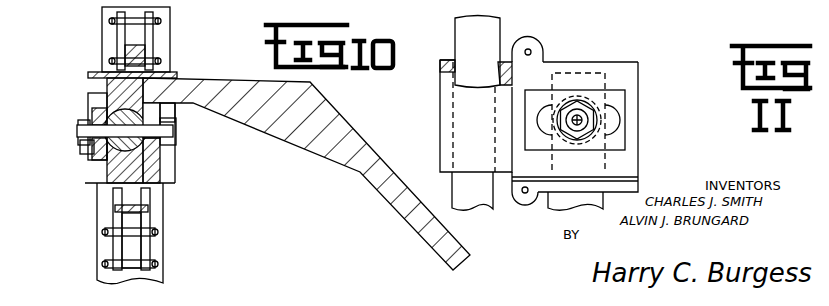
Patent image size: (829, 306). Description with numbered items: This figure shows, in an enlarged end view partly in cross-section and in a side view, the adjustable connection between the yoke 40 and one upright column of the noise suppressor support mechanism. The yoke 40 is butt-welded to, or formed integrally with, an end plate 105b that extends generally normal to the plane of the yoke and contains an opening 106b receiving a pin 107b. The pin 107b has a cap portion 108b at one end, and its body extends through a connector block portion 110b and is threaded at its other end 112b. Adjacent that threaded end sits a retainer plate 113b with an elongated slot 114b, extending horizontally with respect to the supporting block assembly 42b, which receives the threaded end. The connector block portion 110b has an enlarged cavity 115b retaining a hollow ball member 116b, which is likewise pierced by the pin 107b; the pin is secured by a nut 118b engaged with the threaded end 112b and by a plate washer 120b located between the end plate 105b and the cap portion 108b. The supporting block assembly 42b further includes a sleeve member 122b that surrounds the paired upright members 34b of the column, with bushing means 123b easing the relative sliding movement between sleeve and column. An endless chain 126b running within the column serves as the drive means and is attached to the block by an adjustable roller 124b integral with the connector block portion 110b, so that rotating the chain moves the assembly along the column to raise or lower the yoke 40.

In FIG. 10, the columns 34b is at (178, 24).
In FIG. 11, the columns 34b is at (511, 29).
In FIG. 10, the yoke 40 is at (389, 213).
In FIG. 11, the yoke 40 is at (615, 203).
In FIG. 10, the connecting or supporting block assembly 42b is at (201, 55).
In FIG. 11, the connecting or supporting block assembly 42b is at (584, 46).
In FIG. 10, the end plate 105b is at (160, 173).
In FIG. 10, the opening 106b is at (167, 160).
In FIG. 10, the pin 107b is at (147, 202).
In FIG. 11, the pin 107b is at (575, 169).
In FIG. 10, the cap portion 108b is at (170, 137).
In FIG. 10, the connector block portion 110b is at (107, 173).
In FIG. 11, the connector block portion 110b is at (628, 68).
In FIG. 10, the threaded end 112b is at (76, 130).
In FIG. 11, the threaded end 112b is at (580, 119).
In FIG. 10, the retainer plate 113b is at (97, 98).
In FIG. 11, the retainer plate 113b is at (545, 148).
In FIG. 10, the elongated slot 114b is at (85, 141).
In FIG. 11, the elongated slot 114b is at (613, 122).
In FIG. 10, the enlarged cavity 115b is at (118, 100).
In FIG. 11, the enlarged cavity 115b is at (560, 120).
In FIG. 10, the hollow ball member 116b is at (133, 218).
In FIG. 10, the nut 118b is at (80, 160).
In FIG. 11, the nut 118b is at (597, 147).
In FIG. 10, the plate washer 120b is at (170, 122).
In FIG. 11, the sleeve member 122b is at (442, 128).
In FIG. 11, the bushing means 123b is at (442, 67).
In FIG. 10, the adjustable roller 124b is at (126, 61).
In FIG. 11, the adjustable roller 124b is at (543, 55).
In FIG. 10, the endless chain 126b is at (118, 33).